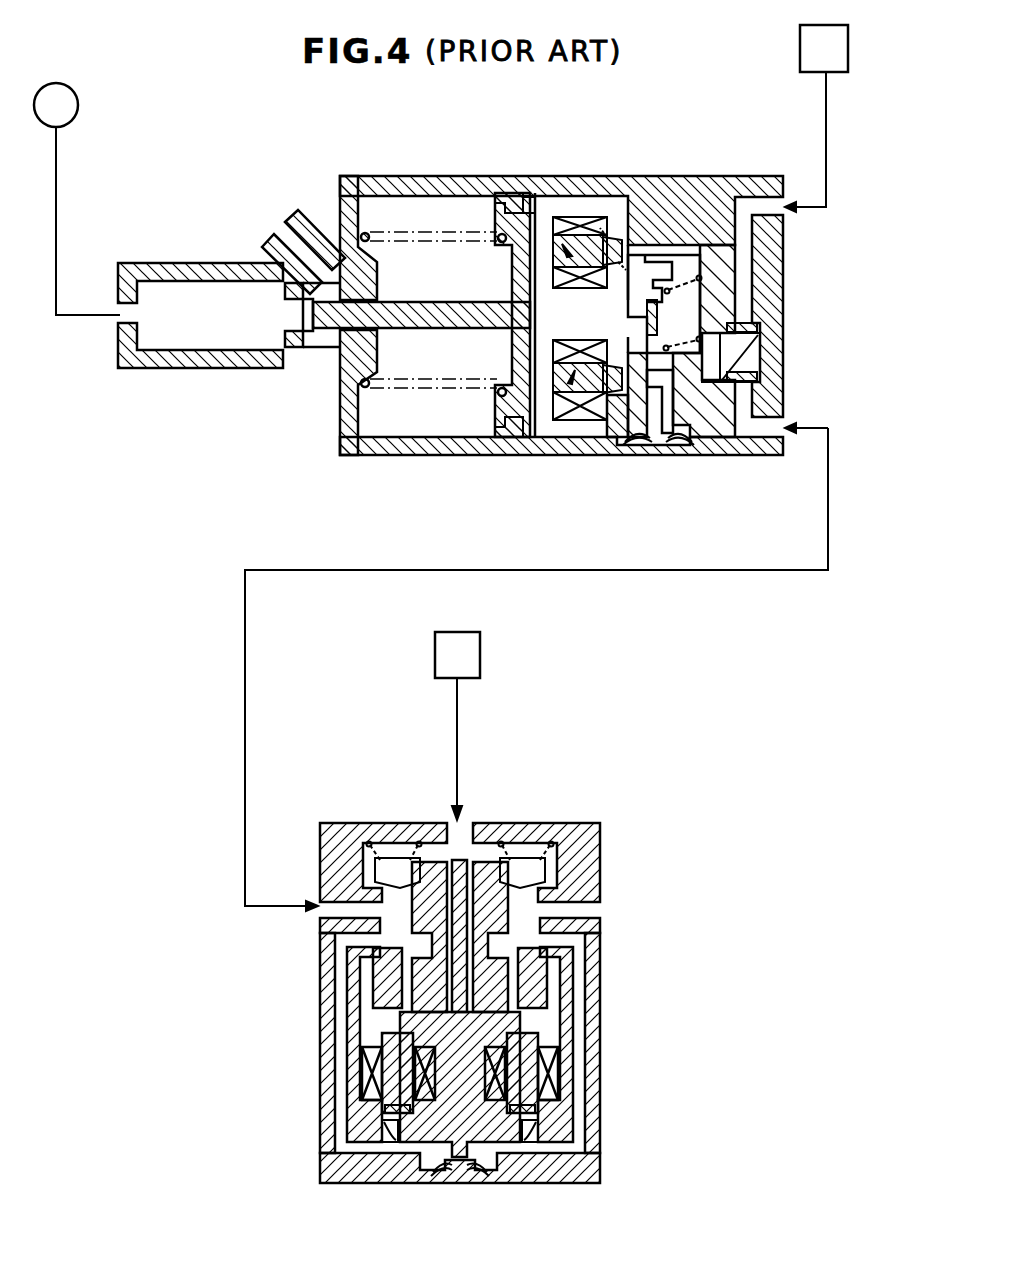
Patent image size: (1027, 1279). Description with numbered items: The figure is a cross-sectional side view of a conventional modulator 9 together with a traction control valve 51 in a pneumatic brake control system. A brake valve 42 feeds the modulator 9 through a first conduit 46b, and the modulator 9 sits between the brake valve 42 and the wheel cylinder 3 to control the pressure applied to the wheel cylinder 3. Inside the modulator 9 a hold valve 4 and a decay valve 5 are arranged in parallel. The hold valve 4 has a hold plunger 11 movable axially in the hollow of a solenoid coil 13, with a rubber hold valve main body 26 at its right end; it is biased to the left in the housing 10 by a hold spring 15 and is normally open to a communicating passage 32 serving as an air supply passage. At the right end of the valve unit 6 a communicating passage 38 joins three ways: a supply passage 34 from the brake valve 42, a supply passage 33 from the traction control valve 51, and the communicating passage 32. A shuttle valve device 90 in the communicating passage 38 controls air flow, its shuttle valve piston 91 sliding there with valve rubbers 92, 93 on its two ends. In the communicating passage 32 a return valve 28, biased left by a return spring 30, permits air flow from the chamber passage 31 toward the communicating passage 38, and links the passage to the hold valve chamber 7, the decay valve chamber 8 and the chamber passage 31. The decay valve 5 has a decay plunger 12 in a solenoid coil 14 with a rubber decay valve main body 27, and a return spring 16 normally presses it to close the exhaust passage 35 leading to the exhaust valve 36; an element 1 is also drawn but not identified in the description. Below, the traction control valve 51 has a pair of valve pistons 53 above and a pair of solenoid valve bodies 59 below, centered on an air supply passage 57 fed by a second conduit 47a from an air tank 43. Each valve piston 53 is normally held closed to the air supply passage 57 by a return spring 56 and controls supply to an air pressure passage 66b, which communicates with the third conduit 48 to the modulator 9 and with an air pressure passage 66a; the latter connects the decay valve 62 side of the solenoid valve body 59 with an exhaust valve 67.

The wheel cylinder 3 is at (78, 108).
The modulator 9 is at (436, 144).
The supply passage 34 is at (770, 182).
The communicating passage 32 is at (690, 255).
The exhaust passage 35 is at (705, 428).
The chamber passage 31 is at (565, 318).
The hold valve chamber 7 is at (512, 250).
The hold valve 4 is at (527, 210).
The retainer 1 is at (530, 205).
The decay valve 5 is at (540, 420).
The hold spring 15 is at (636, 262).
The housing 10 is at (556, 226).
The valve unit 6 is at (568, 248).
The solenoid coil 13 is at (590, 280).
The hold plunger 11 is at (618, 252).
The return spring 16 is at (562, 375).
The solenoid coil 14 is at (578, 392).
The decay plunger 12 is at (587, 415).
The decay valve main body 27 is at (615, 395).
The hold valve main body 26 is at (665, 258).
The return spring 30 is at (703, 262).
The decay valve chamber 8 is at (637, 410).
The return valve 28 is at (660, 318).
The exhaust valve 36 is at (662, 428).
The communicating passage 38 is at (743, 270).
The shuttle valve device 90 is at (776, 336).
The shuttle valve piston 91 is at (752, 347).
The valve rubber 92 is at (758, 330).
The valve rubber 93 is at (763, 372).
The brake valve 42 is at (800, 50).
The first conduit 46b is at (826, 122).
The supply passage 33 is at (772, 423).
The third conduit 48 is at (660, 572).
The air tank 43 is at (470, 652).
The second conduit 47a is at (460, 731).
The traction control valve 51 is at (608, 818).
The air pressure passage 66b is at (320, 910).
The air pressure passage 66a is at (350, 976).
The air supply passage 57 is at (463, 855).
The valve piston 53 is at (395, 870).
The return spring 56 is at (410, 858).
The decay valve 62 is at (385, 1133).
The solenoid valve body 59 is at (410, 1142).
The exhaust valve 67 is at (444, 1175).